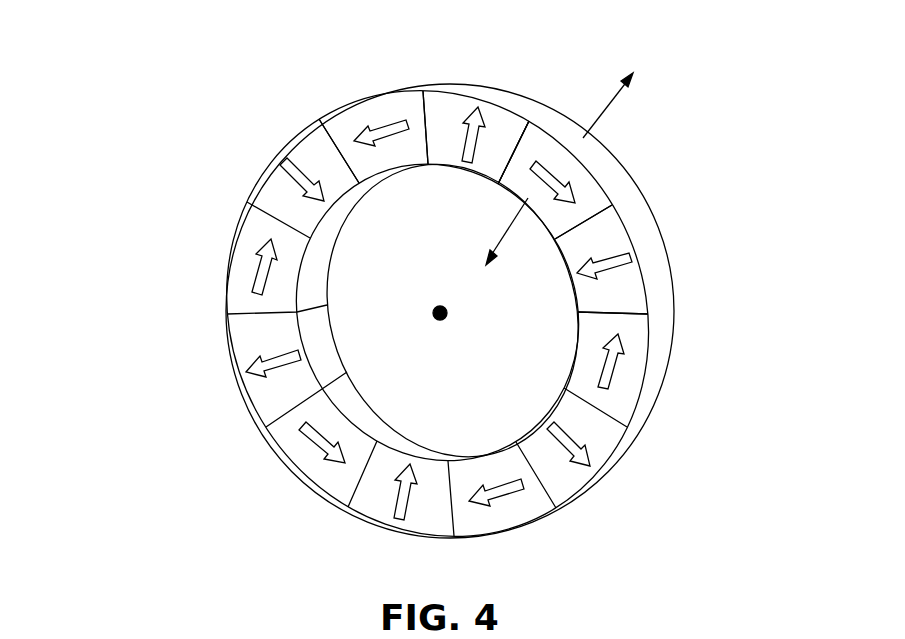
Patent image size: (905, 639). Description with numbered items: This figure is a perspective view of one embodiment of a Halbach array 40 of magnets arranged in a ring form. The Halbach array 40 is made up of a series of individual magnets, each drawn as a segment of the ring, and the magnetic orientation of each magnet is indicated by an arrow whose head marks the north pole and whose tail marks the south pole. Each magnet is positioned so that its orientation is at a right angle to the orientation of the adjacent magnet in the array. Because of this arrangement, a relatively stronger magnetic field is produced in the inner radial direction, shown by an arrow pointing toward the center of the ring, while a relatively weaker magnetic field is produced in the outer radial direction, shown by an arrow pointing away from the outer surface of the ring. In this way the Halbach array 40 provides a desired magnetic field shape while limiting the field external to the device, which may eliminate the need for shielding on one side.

The Halbach array 40 is at (152, 145).